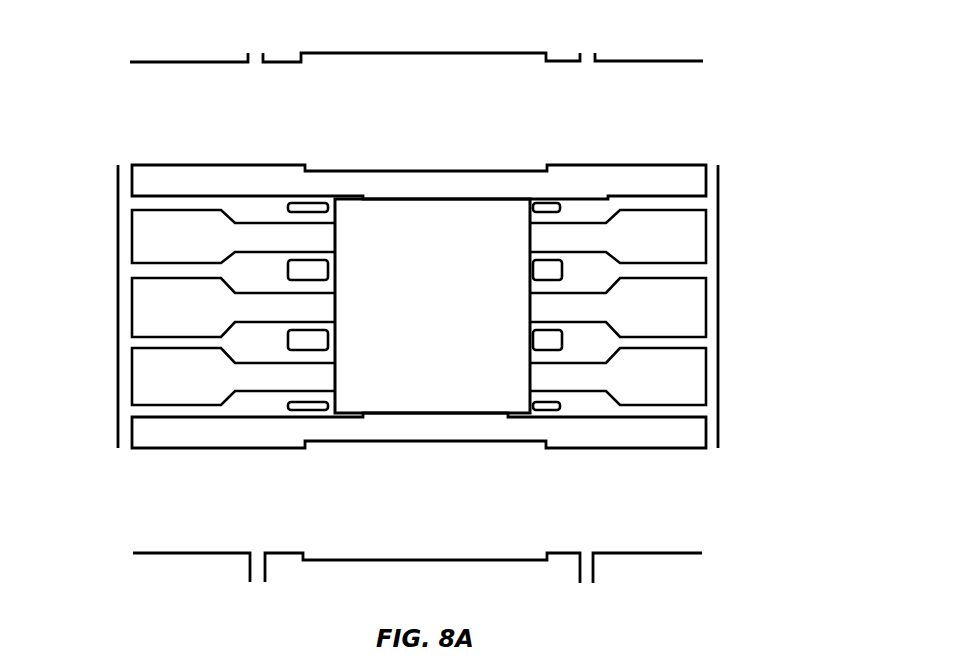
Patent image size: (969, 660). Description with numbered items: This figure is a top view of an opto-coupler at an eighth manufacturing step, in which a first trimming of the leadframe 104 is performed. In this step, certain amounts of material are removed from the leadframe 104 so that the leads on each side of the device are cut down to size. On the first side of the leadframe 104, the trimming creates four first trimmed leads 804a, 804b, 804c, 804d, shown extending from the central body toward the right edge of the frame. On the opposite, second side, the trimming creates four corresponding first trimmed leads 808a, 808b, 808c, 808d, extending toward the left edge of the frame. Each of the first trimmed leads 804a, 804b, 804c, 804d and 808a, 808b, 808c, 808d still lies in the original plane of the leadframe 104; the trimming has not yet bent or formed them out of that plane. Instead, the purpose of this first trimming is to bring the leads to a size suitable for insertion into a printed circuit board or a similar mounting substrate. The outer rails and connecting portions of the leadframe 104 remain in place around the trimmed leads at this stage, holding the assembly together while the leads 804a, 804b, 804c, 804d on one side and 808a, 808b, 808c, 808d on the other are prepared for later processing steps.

The leadframe 104 is at (698, 122).
The first trimmed lead 808a is at (277, 210).
The first trimmed lead 808b is at (260, 270).
The first trimmed lead 808c is at (245, 348).
The first trimmed lead 808d is at (262, 409).
The first trimmed lead 804a is at (588, 200).
The first trimmed lead 804b is at (622, 268).
The first trimmed lead 804c is at (622, 340).
The first trimmed lead 804d is at (603, 410).